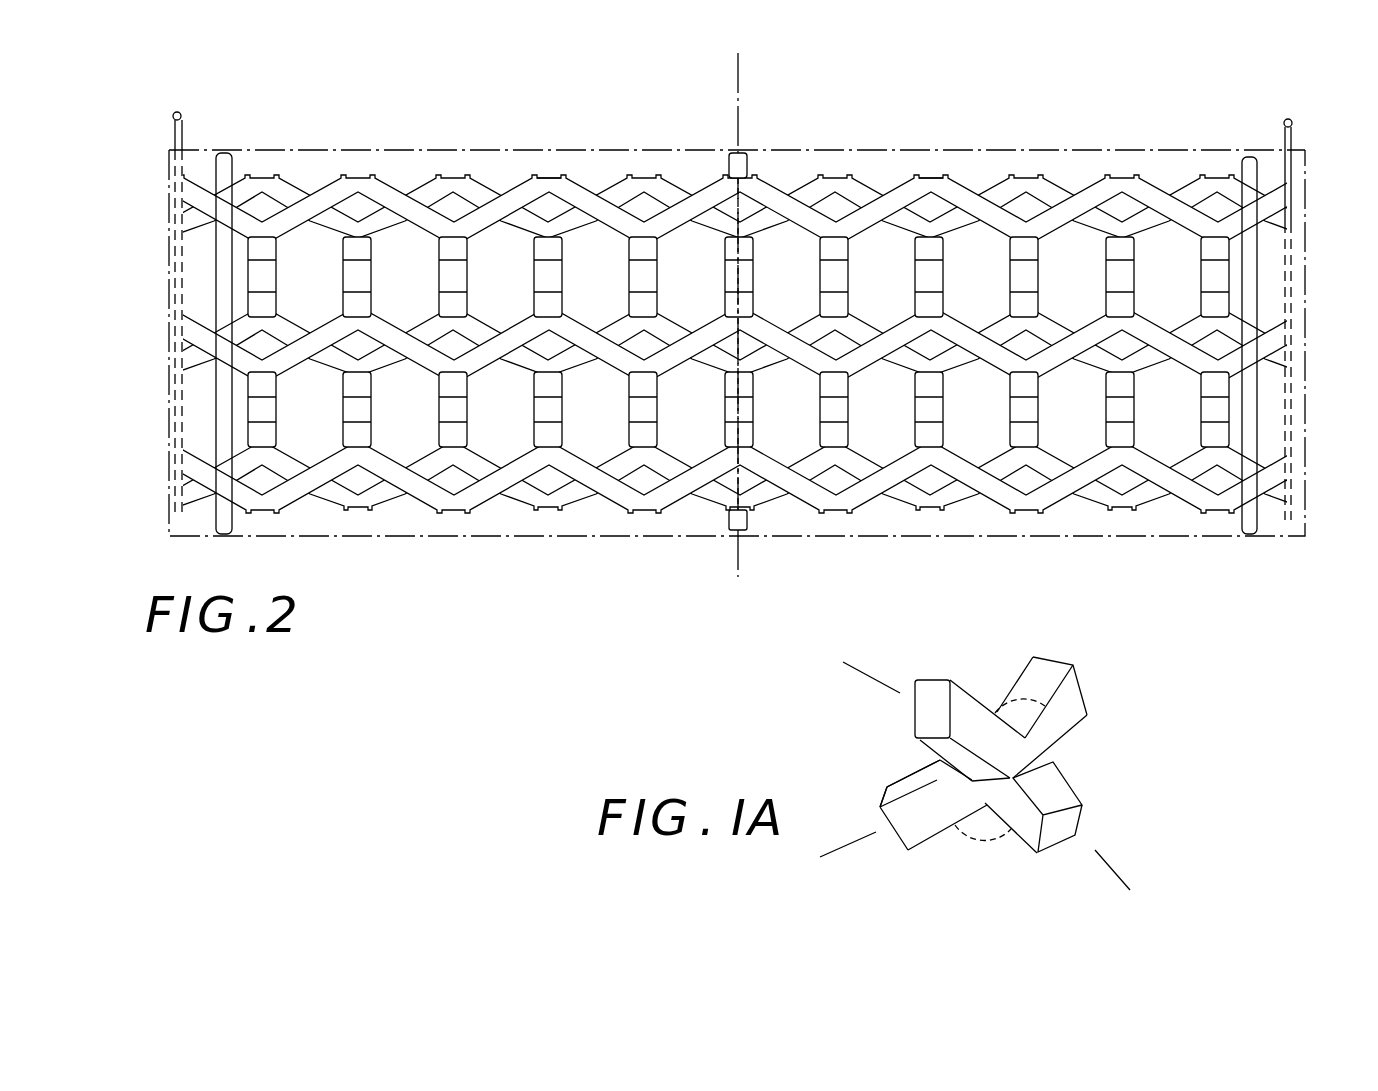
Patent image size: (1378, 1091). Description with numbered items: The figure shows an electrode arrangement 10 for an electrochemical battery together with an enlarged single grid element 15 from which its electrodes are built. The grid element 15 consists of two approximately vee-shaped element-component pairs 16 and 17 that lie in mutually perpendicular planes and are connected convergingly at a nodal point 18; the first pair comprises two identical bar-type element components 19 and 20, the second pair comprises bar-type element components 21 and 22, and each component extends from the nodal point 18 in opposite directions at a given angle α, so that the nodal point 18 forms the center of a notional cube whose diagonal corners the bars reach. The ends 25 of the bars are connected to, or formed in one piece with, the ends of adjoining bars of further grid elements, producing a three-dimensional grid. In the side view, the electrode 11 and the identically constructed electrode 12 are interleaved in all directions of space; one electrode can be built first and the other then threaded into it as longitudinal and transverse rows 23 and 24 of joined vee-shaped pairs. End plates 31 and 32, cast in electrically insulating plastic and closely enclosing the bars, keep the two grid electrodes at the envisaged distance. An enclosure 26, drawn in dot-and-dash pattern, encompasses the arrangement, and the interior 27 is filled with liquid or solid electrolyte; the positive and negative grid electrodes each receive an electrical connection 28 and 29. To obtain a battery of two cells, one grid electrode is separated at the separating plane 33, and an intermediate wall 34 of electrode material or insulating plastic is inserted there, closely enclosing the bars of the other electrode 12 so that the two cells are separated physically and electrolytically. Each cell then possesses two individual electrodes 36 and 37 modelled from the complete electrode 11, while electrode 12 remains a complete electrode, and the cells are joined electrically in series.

In FIG. 2, the electrode arrangement 10 is at (1063, 138).
In FIG. 2, the electrode 11 is at (322, 172).
In FIG. 2, the electrode 12 is at (453, 172).
In FIG. 1A, the grid element 15 is at (1035, 736).
In FIG. 1A, the vee-shaped element-component pair 16 is at (992, 696).
In FIG. 1A, the vee-shaped element-component pair 17 is at (953, 830).
In FIG. 1A, the nodal point 18 is at (1010, 760).
In FIG. 1A, the bar-type element component 19 is at (932, 679).
In FIG. 1A, the bar-type element component 20 is at (1088, 700).
In FIG. 1A, the bar-type element component 21 is at (918, 823).
In FIG. 1A, the bar-type element component 22 is at (1068, 812).
In FIG. 2, the longitudinal row 23 is at (858, 181).
In FIG. 2, the transverse row 24 is at (952, 265).
In FIG. 1A, the end 25 is at (1060, 663).
In FIG. 2, the enclosure 26 is at (392, 150).
In FIG. 2, the interior 27 is at (596, 263).
In FIG. 2, the electrical connection 28 is at (173, 137).
In FIG. 2, the electrical connection 29 is at (1292, 128).
In FIG. 2, the end plate 31 is at (219, 158).
In FIG. 2, the end plate 32 is at (1248, 162).
In FIG. 2, the separating plane 33 is at (740, 72).
In FIG. 2, the intermediate wall 34 is at (729, 172).
In FIG. 2, the individual electrode 36 is at (541, 172).
In FIG. 2, the individual electrode 37 is at (930, 172).